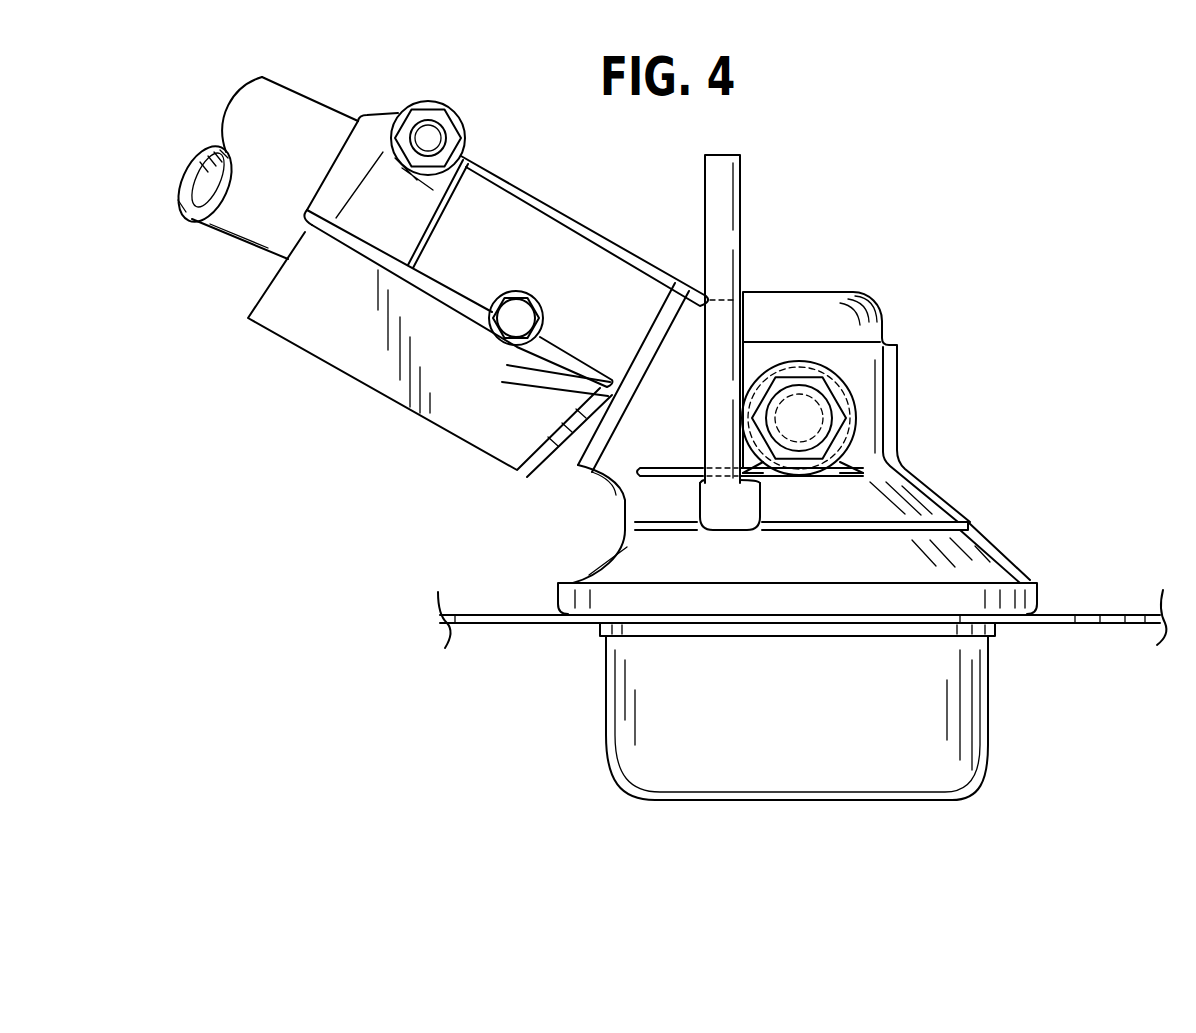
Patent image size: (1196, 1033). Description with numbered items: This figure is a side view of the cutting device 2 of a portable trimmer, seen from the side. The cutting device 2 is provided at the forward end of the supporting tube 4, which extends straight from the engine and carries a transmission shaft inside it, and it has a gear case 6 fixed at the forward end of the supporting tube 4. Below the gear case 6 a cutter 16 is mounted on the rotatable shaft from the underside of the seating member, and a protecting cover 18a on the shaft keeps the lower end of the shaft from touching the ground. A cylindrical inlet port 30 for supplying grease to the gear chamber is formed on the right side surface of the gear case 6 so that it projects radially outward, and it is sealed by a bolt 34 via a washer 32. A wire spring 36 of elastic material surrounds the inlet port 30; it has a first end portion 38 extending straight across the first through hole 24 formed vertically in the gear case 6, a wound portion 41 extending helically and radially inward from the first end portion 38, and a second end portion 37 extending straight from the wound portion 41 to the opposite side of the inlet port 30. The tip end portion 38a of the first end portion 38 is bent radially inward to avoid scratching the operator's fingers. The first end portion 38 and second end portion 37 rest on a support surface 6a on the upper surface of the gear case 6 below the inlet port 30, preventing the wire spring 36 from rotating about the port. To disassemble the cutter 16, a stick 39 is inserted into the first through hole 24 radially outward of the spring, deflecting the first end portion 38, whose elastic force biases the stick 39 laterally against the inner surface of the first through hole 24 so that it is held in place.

The cutting device 2 is at (934, 277).
The supporting tube 4 is at (294, 135).
The gear case 6 is at (1003, 547).
The support surface 6a is at (857, 467).
The cutter 16 is at (1078, 624).
The protecting cover 18a is at (879, 765).
The first through hole 24 is at (748, 508).
The cylindrical inlet port 30 is at (850, 392).
The washer 32 is at (850, 393).
The bolt 34 is at (787, 390).
The wire spring 36 is at (767, 483).
The second end portion 37 is at (853, 464).
The first end portion 38 is at (665, 477).
The tip end portion 38a is at (612, 478).
The stick 39 is at (718, 215).
The wound portion 41 is at (812, 375).